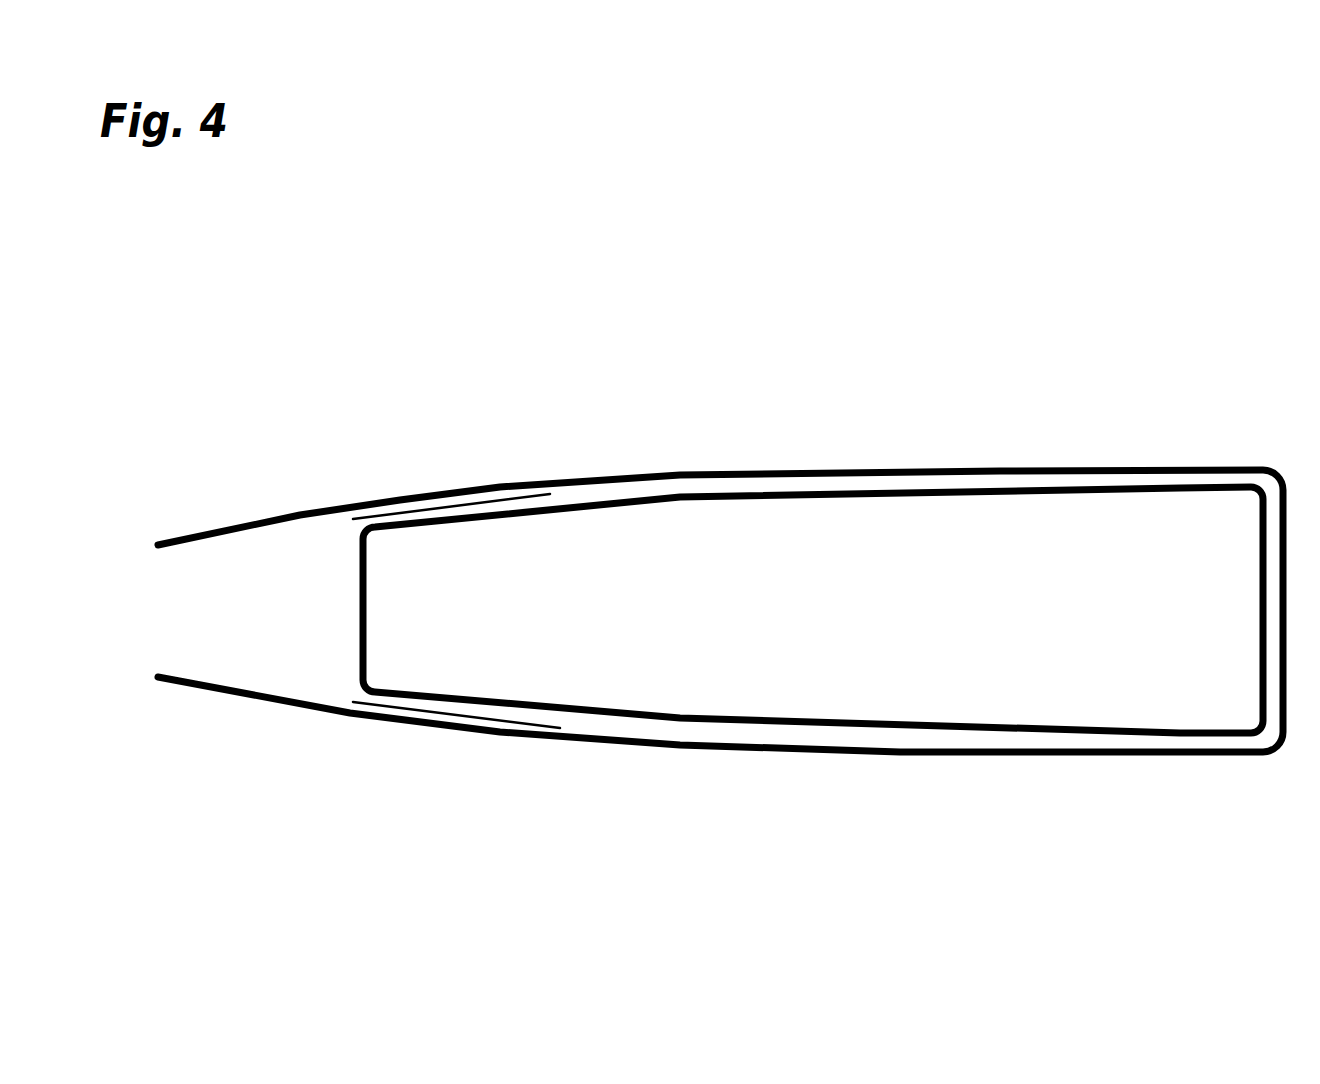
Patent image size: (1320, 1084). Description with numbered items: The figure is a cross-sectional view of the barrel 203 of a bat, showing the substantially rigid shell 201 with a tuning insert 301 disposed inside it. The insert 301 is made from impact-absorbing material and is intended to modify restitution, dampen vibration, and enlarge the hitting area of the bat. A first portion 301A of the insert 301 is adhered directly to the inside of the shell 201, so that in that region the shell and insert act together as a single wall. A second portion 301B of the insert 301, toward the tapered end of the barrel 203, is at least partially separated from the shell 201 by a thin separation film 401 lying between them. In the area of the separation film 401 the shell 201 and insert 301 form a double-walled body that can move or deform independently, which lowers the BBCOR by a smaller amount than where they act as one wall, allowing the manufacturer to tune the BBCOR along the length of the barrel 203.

The shell 201 is at (327, 474).
The barrel portion 203 is at (917, 758).
The insert 301 is at (788, 490).
The first portion of the insert 301A is at (1095, 485).
The second portion of the insert 301B is at (432, 506).
The separation film 401 is at (468, 503).